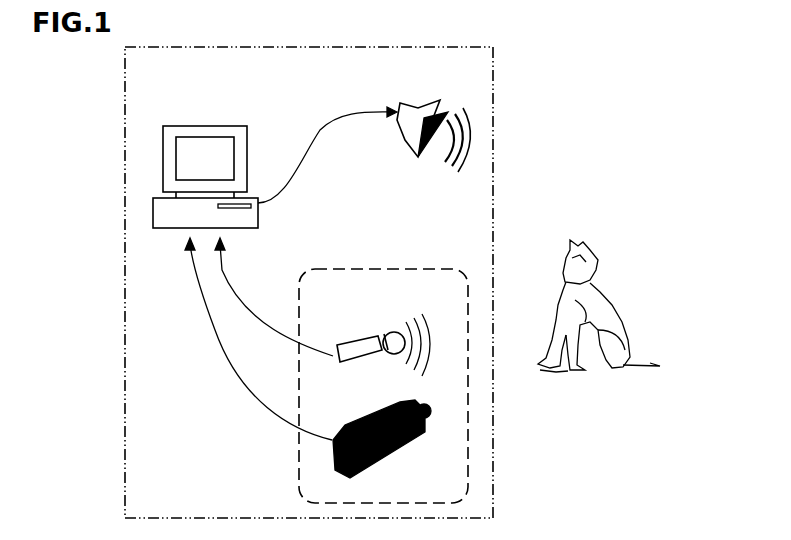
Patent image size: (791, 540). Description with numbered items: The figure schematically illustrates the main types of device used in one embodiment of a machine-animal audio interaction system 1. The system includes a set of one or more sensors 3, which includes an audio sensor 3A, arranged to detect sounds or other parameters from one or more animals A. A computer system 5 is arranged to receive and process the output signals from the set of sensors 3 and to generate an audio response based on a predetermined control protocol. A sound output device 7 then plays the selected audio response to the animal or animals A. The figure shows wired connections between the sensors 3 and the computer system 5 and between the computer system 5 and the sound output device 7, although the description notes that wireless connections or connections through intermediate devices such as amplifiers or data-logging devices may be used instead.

The machine-animal audio interaction system 1 is at (124, 283).
The computer system 5 is at (205, 125).
The sound output device 7 is at (438, 100).
The set of sensors 3 is at (449, 488).
The audio sensor 3A is at (362, 340).
The animal A is at (597, 240).